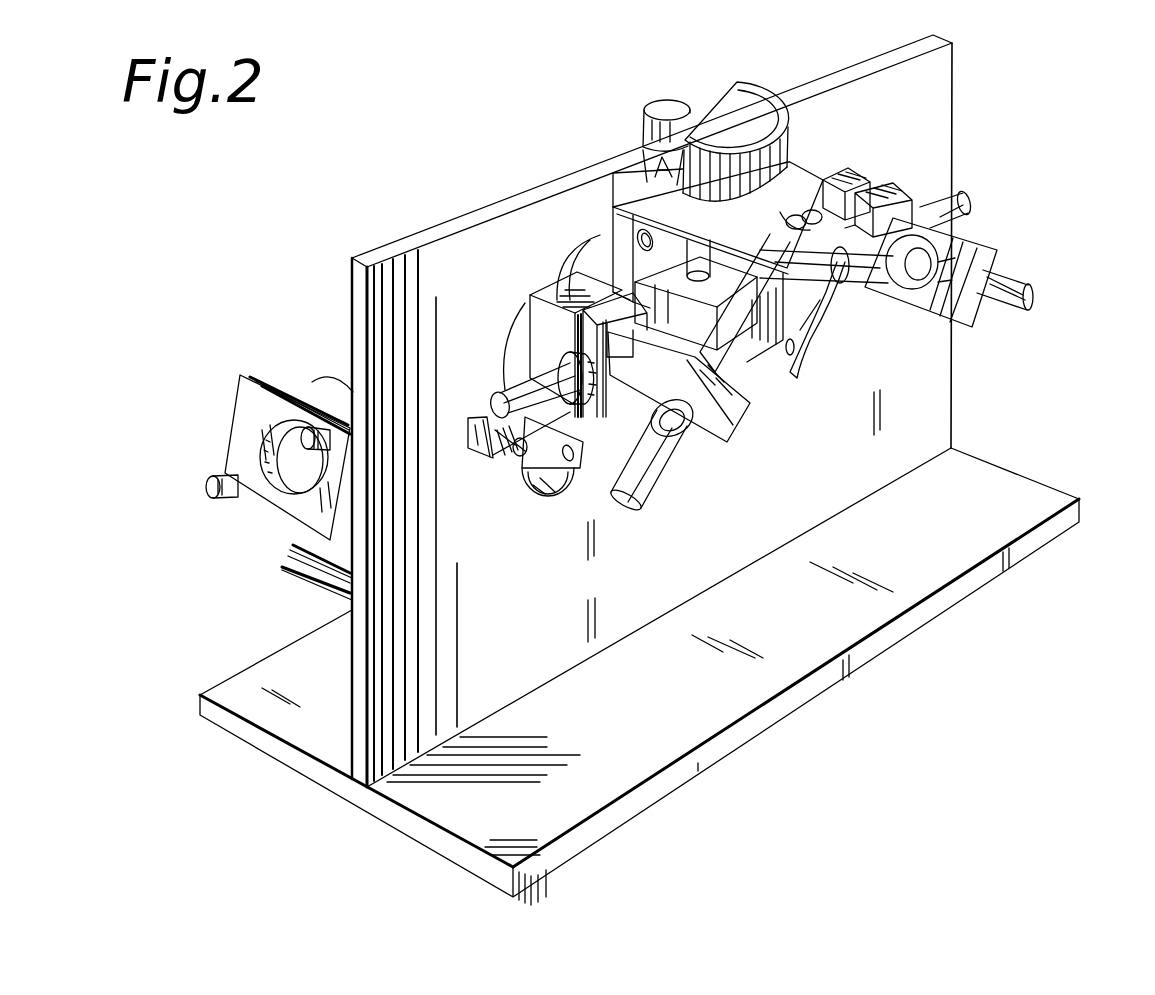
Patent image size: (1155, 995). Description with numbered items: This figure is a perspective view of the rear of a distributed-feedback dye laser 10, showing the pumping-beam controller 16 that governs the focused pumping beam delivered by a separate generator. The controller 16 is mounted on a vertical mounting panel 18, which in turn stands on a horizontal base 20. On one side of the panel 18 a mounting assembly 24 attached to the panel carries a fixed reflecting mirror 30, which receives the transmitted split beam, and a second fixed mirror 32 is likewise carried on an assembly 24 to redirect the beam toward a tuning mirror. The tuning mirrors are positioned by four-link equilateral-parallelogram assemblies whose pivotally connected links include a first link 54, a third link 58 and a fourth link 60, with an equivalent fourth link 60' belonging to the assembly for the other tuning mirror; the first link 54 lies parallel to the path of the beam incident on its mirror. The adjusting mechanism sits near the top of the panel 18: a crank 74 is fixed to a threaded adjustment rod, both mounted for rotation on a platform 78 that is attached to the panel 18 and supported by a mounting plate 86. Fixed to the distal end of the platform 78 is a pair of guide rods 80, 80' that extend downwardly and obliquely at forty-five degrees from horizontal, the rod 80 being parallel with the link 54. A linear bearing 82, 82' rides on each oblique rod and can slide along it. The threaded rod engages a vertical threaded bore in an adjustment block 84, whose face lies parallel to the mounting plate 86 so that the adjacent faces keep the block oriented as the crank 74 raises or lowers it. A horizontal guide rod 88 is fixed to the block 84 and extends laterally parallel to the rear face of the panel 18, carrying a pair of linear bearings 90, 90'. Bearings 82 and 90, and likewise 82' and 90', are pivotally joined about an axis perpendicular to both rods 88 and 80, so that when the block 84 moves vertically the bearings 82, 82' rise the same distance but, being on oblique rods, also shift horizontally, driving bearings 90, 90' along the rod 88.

The distributed-feedback dye laser 10 is at (226, 198).
The pumping-beam controller 16 is at (686, 411).
The vertical mounting panel 18 is at (428, 238).
The horizontal base 20 is at (698, 718).
The mounting assembly 24 is at (242, 432).
The fixed reflecting mirror 30 is at (345, 560).
The second fixed mirror 32 is at (327, 383).
The first link 54 is at (507, 462).
The third link 58 is at (575, 427).
The fourth link 60 is at (559, 482).
The fourth link 60' is at (832, 320).
The crank 74 is at (703, 96).
The platform 78 is at (625, 182).
The guide rod 80 is at (658, 452).
The guide rod 80' is at (1022, 277).
The linear bearing 82 is at (695, 387).
The linear bearing 82' is at (941, 280).
The adjustment block 84 is at (748, 370).
The mounting plate 86 is at (622, 247).
The horizontal guide rod 88 is at (962, 192).
The linear bearing 90 is at (559, 344).
The linear bearing 90' is at (867, 185).